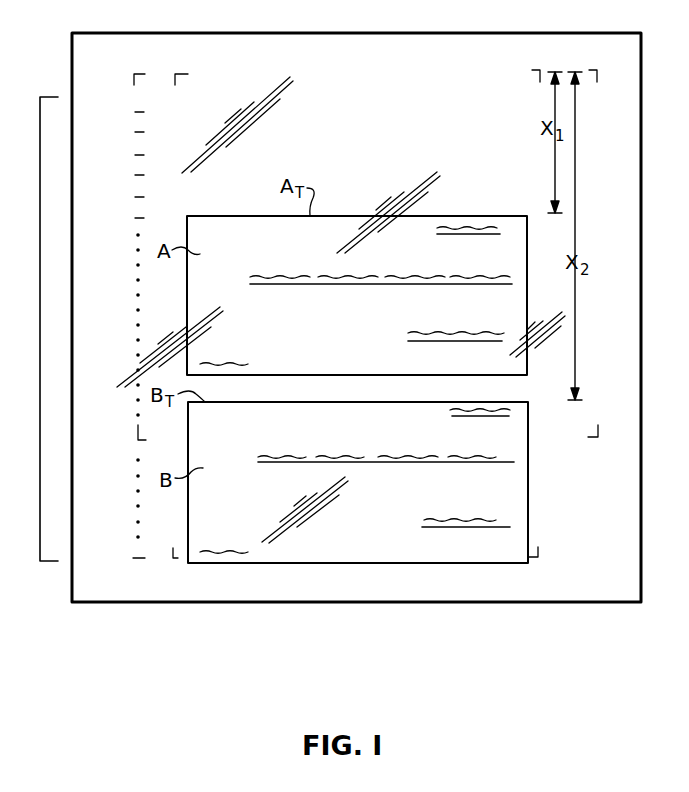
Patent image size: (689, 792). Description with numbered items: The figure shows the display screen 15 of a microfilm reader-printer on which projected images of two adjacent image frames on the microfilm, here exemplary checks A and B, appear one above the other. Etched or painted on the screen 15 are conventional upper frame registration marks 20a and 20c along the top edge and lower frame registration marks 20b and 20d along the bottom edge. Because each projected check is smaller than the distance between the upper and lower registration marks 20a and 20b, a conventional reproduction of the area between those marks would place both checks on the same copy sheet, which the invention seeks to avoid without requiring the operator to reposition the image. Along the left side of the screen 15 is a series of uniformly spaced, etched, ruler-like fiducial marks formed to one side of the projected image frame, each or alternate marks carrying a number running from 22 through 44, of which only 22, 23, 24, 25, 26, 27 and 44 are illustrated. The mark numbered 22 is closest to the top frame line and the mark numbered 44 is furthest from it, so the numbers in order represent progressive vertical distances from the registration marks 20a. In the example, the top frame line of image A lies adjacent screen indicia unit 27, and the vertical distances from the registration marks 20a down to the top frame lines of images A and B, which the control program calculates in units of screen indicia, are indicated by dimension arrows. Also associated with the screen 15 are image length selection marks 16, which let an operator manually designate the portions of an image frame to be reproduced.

The display screen 15 is at (357, 33).
The image length selection marks 16 is at (40, 318).
The upper frame registration mark 20a is at (186, 73).
The lower frame registration mark 20b is at (178, 558).
The upper frame registration mark 20c is at (140, 72).
The lower frame registration mark 20d is at (138, 437).
The fiducial mark number 22 is at (123, 109).
The fiducial mark number 23 is at (123, 127).
The fiducial mark number 24 is at (123, 153).
The fiducial mark number 25 is at (123, 173).
The fiducial mark number 26 is at (123, 194).
The fiducial mark number 27 is at (123, 214).
The fiducial mark number 44 is at (120, 549).